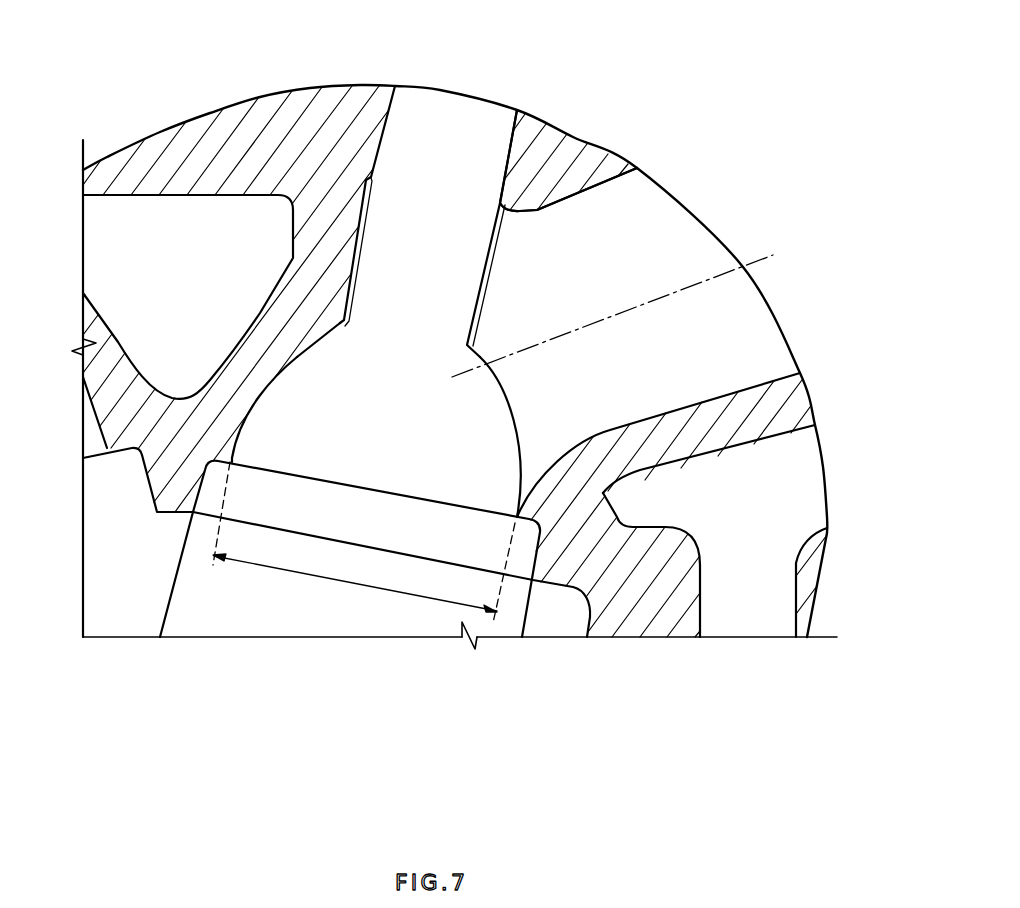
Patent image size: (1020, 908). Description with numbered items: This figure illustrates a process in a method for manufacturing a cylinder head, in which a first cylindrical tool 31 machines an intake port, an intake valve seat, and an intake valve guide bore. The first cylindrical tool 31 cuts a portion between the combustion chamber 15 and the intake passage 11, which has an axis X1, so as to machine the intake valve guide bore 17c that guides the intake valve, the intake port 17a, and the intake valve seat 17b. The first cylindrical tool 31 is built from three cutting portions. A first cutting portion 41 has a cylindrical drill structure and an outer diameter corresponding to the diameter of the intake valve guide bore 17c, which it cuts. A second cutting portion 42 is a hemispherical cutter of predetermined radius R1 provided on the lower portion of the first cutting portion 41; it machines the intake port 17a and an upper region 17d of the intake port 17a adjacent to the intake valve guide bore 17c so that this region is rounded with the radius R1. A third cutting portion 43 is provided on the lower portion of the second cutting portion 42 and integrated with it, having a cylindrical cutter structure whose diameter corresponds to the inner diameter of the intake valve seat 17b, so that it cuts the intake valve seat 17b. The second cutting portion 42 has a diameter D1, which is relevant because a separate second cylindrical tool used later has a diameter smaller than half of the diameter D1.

The intake passage 11 is at (683, 372).
The first cutting portion 41 is at (421, 125).
The intake valve guide bore 17c is at (510, 150).
The first cylindrical tool 31 is at (499, 278).
The axis of the intake passage X1 is at (683, 287).
The second cutting portion 42 is at (303, 370).
The upper region of the intake port 17d is at (310, 345).
The predetermined radius R1 is at (279, 380).
The third cutting portion 43 is at (213, 488).
The intake port 17a is at (365, 452).
The intake valve seat 17b is at (425, 530).
The combustion chamber 15 is at (565, 620).
The diameter of the second cutting portion D1 is at (364, 542).